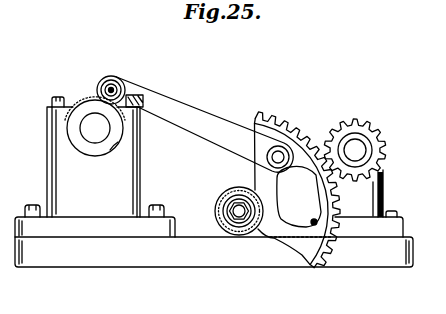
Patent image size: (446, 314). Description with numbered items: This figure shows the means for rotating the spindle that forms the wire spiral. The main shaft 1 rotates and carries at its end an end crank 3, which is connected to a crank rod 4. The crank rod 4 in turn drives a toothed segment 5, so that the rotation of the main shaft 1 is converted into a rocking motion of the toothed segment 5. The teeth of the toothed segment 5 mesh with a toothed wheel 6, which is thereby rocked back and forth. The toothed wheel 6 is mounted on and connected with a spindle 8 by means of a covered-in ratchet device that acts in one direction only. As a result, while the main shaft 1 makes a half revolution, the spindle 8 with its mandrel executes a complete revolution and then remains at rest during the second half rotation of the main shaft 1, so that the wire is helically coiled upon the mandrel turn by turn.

The main shaft 1 is at (76, 128).
The end crank 3 is at (100, 86).
The crank rod 4 is at (221, 128).
The toothed segment 5 is at (318, 177).
The toothed wheel 6 is at (359, 121).
The spindle 8 is at (366, 150).